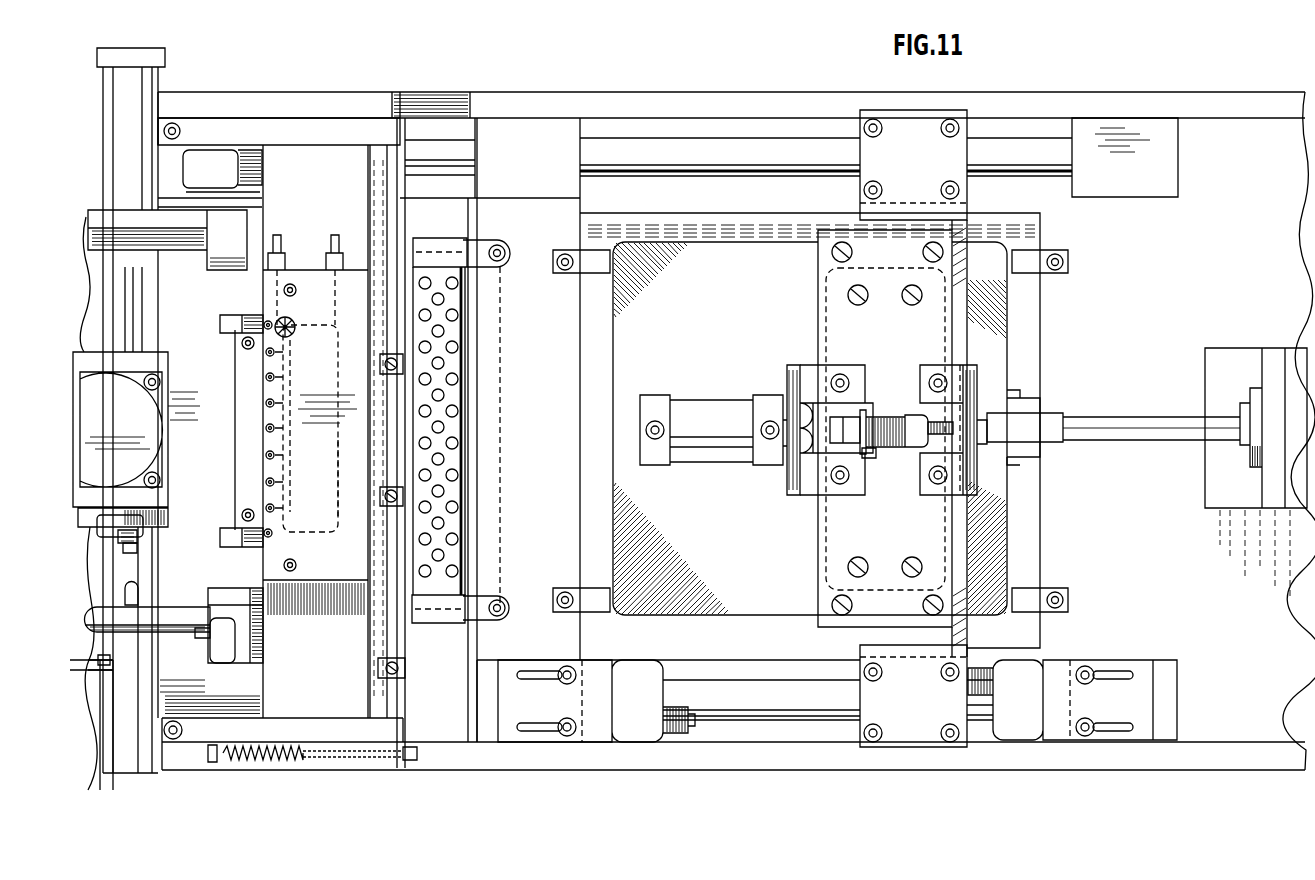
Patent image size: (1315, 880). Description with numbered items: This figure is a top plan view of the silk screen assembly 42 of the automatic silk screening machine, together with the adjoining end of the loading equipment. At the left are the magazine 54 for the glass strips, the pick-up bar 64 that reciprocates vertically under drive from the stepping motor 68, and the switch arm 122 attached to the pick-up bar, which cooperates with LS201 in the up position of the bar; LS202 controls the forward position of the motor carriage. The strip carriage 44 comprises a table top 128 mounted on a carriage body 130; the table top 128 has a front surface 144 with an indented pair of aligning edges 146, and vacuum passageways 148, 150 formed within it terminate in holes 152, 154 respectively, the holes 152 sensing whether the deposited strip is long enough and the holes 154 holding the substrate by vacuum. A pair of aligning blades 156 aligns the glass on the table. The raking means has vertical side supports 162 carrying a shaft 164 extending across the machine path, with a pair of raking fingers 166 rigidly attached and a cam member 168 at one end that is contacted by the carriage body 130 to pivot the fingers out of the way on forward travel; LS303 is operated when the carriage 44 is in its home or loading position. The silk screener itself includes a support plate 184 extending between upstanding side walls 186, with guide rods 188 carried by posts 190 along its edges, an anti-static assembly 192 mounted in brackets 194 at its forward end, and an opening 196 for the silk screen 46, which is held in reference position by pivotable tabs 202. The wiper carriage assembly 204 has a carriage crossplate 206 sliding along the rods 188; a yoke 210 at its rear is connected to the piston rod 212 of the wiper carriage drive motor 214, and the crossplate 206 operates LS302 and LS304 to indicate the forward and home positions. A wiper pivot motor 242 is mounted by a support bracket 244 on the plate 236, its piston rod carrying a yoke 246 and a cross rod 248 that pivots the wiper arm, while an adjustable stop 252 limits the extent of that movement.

The silk screen assembly 42 is at (756, 91).
The strip carriage 44 is at (313, 248).
The silk screen 46 is at (729, 327).
The magazine 54 is at (158, 325).
The pick-up bar 64 is at (132, 333).
The stepping motor 68 is at (120, 412).
The switch arm 122 is at (142, 517).
The table top 128 is at (364, 544).
The carriage body 130 is at (328, 696).
The front surface 144 is at (237, 443).
The aligning edges 146 is at (267, 565).
The vacuum passageway 148 is at (333, 463).
The vacuum passageway 150 is at (288, 390).
The sensing holes 152 is at (268, 320).
The vacuum holding holes 154 is at (267, 403).
The aligning blades 156 is at (220, 540).
The vertical side supports 162 is at (286, 118).
The shaft 164 is at (400, 203).
The raking fingers 166 is at (380, 363).
The cam member 168 is at (407, 668).
The support plate 184 is at (567, 399).
The side walls 186 is at (619, 92).
The guide rods 188 is at (739, 137).
The posts 190 is at (583, 185).
The anti-static assembly 192 is at (440, 270).
The brackets 194 is at (490, 603).
The opening 196 is at (580, 502).
The pivotable tabs 202 is at (616, 250).
The wiper carriage assembly 204 is at (797, 363).
The carriage crossplate 206 is at (968, 230).
The yoke 210 is at (1042, 403).
The piston rod 212 is at (1113, 417).
The wiper carriage drive motor 214 is at (1252, 388).
The plate 236 is at (928, 236).
The wiper pivot motor 242 is at (720, 396).
The support bracket 244 is at (787, 487).
The yoke 246 is at (874, 407).
The cross rod 248 is at (870, 458).
The adjustable stop 252 is at (940, 450).
The limit switch LS201 is at (112, 530).
The limit switch LS202 is at (226, 638).
The limit switch LS302 is at (645, 735).
The limit switch LS303 is at (234, 179).
The limit switch LS304 is at (1022, 735).